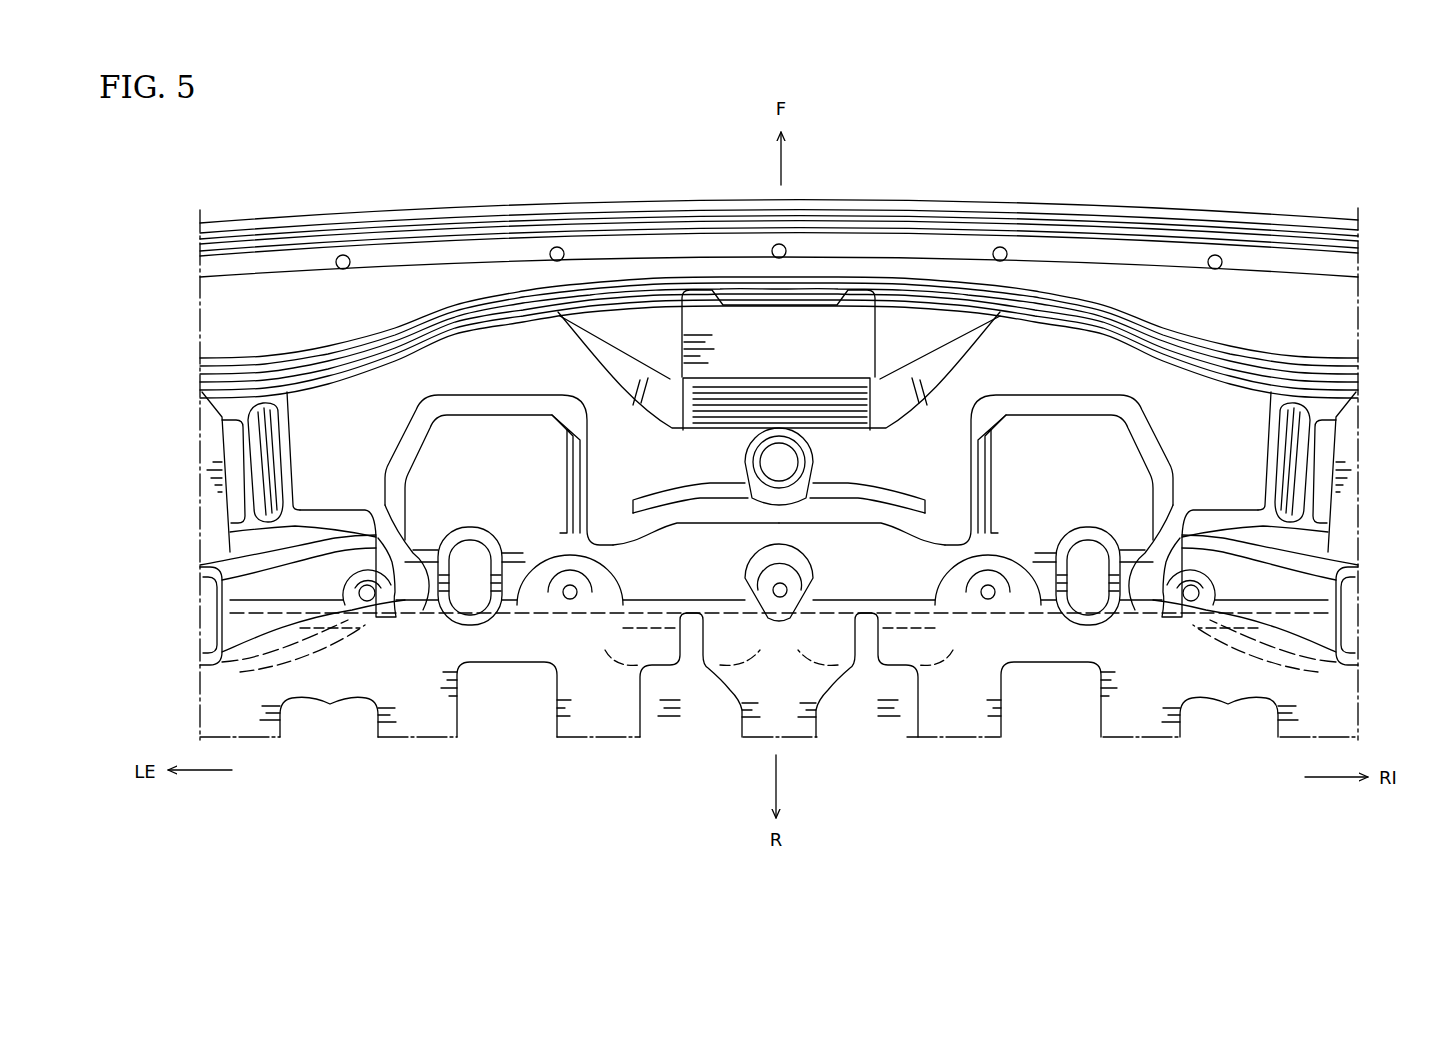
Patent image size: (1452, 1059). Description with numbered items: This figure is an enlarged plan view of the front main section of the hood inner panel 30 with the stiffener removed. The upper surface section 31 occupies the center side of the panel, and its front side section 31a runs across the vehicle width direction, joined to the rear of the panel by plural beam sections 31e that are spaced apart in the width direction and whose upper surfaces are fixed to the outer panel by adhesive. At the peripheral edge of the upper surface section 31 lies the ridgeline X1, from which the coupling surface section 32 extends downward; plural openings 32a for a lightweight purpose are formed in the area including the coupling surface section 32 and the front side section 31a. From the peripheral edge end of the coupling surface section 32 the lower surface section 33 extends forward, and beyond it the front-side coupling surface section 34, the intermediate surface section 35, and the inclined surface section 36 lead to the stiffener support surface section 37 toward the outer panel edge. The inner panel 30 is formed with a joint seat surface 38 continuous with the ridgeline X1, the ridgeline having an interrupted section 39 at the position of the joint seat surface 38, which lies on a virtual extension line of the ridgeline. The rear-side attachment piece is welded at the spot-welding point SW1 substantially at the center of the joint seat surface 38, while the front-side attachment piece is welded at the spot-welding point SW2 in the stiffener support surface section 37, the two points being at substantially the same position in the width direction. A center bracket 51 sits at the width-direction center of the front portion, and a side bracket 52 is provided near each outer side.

The inner panel 30 is at (957, 180).
The upper surface section 31 is at (652, 612).
The front side section 31a is at (903, 622).
The beam sections 31e is at (287, 718).
The coupling surface section 32 is at (830, 540).
The openings 32a is at (217, 640).
The lower surface section 33 is at (615, 455).
The front-side coupling surface section 34 is at (806, 403).
The intermediate surface section 35 is at (912, 333).
The inclined surface section 36 is at (810, 296).
The stiffener support surface section 37 is at (614, 246).
The joint seat surface 38 is at (340, 590).
The interrupted section 39 is at (386, 618).
The center bracket 51 is at (750, 341).
The side bracket 52 is at (210, 437).
The spot-welding point SW1 is at (367, 588).
The spot-welding point SW2 is at (341, 254).
The ridgeline X1 is at (848, 600).